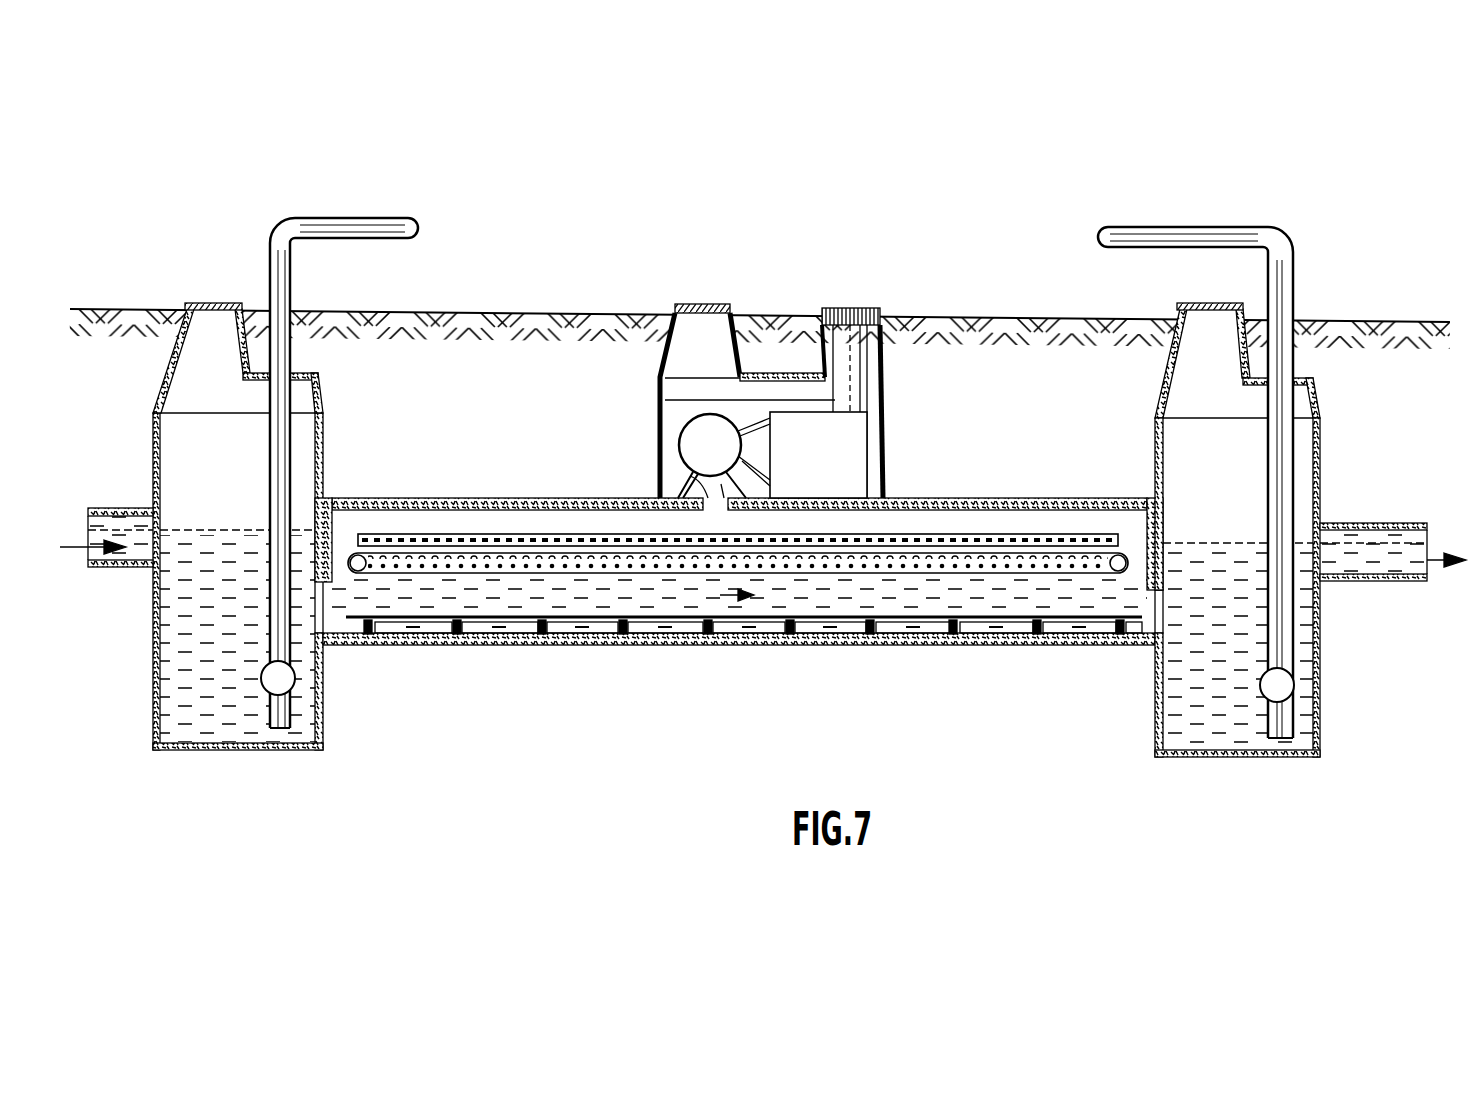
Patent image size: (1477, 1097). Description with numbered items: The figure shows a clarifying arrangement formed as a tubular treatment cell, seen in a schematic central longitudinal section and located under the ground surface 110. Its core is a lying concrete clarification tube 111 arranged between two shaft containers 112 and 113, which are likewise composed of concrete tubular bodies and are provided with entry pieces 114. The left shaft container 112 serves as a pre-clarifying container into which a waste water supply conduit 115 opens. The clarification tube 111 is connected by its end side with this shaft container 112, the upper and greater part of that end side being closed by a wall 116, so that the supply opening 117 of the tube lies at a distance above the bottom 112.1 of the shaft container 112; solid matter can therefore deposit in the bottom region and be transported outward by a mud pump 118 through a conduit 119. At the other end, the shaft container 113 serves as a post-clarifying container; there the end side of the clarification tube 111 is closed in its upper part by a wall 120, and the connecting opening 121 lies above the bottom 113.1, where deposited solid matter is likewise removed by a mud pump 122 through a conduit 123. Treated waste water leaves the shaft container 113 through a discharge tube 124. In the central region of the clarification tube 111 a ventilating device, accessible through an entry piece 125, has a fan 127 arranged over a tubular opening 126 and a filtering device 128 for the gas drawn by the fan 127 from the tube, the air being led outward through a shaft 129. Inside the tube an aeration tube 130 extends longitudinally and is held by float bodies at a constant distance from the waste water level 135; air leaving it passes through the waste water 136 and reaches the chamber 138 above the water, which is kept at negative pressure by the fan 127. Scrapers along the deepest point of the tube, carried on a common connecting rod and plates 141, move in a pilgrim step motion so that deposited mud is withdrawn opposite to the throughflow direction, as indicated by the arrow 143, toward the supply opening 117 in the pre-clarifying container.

The ground surface 110 is at (963, 316).
The clarification tube 111 is at (774, 573).
The shaft container 112 is at (274, 604).
The bottom 112.1 is at (291, 752).
The shaft container 113 is at (1272, 616).
The bottom 113.1 is at (1190, 758).
The entry piece 114 is at (187, 355).
The waste water supply conduit 115 is at (123, 570).
The wall 116 is at (311, 474).
The supply opening 117 is at (324, 620).
The mud pump 118 is at (296, 684).
The conduit 119 is at (361, 240).
The wall 120 is at (1160, 546).
The connecting opening 121 is at (1148, 620).
The mud pump 122 is at (1295, 683).
The conduit 123 is at (1243, 482).
The discharge tube 124 is at (1362, 581).
The entry piece 125 is at (672, 358).
The tubular opening 126 is at (668, 492).
The fan 127 is at (696, 443).
The filtering device 128 is at (855, 460).
The shaft 129 is at (857, 372).
The aeration tube 130 is at (738, 512).
The waste water level 135 is at (1022, 534).
The waste water 136 is at (1025, 606).
The chamber 138 is at (490, 521).
The bottom plates 141 is at (612, 637).
The arrow 143 is at (712, 637).